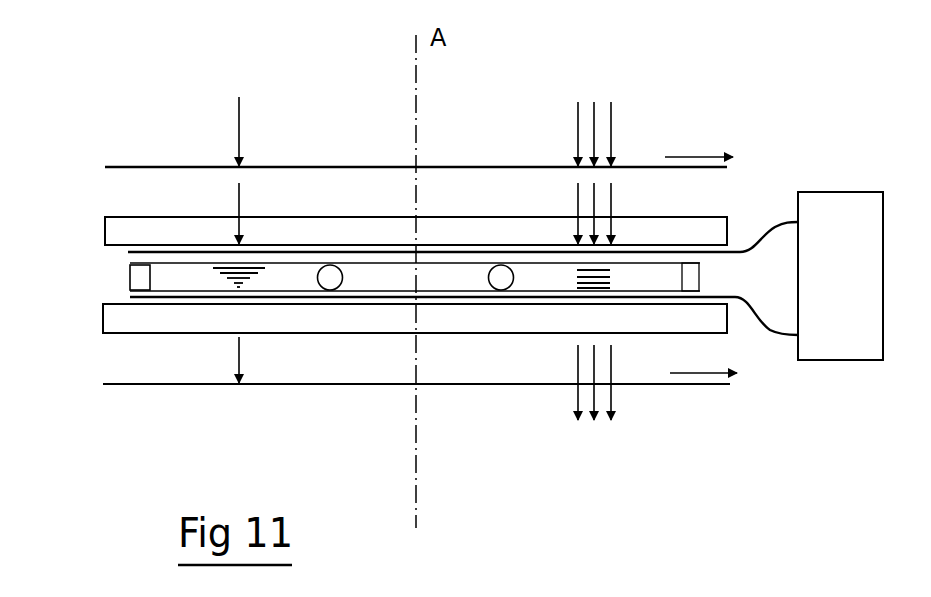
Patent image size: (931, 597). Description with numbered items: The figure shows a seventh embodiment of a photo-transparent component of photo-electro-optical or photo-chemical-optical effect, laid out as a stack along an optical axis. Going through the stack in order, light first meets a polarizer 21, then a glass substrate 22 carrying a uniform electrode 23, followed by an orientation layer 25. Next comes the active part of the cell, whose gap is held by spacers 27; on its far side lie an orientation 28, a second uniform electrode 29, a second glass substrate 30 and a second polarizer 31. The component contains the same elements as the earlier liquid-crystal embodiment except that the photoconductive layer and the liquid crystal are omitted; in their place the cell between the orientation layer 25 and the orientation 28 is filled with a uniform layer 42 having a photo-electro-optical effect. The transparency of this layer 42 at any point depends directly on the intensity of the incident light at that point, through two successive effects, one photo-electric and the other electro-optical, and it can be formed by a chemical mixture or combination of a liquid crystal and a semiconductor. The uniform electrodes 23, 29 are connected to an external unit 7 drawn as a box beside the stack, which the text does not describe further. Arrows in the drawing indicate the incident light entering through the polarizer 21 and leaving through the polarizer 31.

The polarizer 21 is at (178, 167).
The glass substrate 22 is at (125, 214).
The uniform electrode 23 is at (127, 247).
The orientation layer 25 is at (150, 263).
The spacers 27 is at (498, 276).
The orientation 28 is at (158, 302).
The uniform electrode 29 is at (153, 312).
The glass substrate 30 is at (145, 323).
The polarizer 31 is at (118, 385).
The uniform layer 42 is at (163, 284).
The pressure source 7 is at (828, 332).